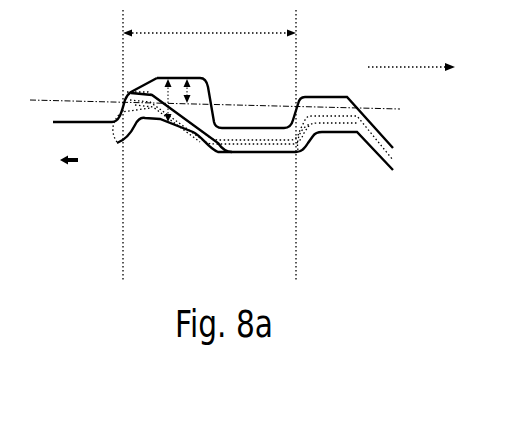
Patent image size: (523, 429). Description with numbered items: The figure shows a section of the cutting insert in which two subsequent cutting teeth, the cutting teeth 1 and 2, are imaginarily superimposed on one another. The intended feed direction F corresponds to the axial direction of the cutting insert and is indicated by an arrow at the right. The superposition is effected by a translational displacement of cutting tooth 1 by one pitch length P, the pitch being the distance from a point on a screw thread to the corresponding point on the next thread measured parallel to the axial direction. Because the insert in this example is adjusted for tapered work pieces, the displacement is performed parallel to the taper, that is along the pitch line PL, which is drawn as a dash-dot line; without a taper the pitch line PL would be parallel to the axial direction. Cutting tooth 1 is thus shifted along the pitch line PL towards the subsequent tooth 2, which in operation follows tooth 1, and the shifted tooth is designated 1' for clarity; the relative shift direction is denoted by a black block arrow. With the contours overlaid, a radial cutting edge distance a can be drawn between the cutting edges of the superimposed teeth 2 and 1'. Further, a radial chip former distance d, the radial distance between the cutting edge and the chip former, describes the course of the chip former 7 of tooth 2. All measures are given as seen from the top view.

The cutting tooth 1 is at (255, 120).
The virtually shifted tooth 1' is at (215, 95).
The cutting tooth 2 is at (220, 91).
The chip former 7 is at (187, 118).
The radial cutting edge distance a is at (207, 93).
The radial chip former distance d is at (142, 87).
The pitch length P is at (209, 22).
The feed direction F is at (411, 56).
The pitch line PL is at (215, 91).